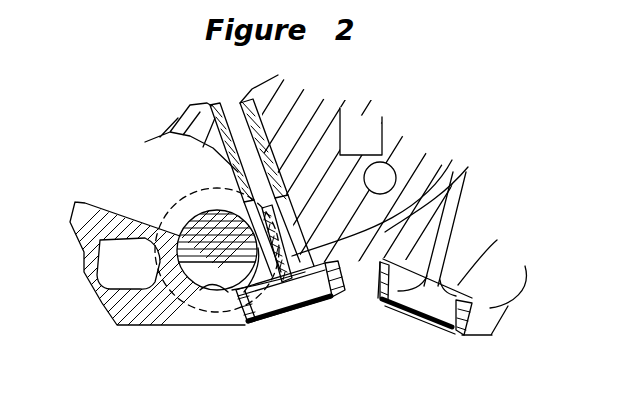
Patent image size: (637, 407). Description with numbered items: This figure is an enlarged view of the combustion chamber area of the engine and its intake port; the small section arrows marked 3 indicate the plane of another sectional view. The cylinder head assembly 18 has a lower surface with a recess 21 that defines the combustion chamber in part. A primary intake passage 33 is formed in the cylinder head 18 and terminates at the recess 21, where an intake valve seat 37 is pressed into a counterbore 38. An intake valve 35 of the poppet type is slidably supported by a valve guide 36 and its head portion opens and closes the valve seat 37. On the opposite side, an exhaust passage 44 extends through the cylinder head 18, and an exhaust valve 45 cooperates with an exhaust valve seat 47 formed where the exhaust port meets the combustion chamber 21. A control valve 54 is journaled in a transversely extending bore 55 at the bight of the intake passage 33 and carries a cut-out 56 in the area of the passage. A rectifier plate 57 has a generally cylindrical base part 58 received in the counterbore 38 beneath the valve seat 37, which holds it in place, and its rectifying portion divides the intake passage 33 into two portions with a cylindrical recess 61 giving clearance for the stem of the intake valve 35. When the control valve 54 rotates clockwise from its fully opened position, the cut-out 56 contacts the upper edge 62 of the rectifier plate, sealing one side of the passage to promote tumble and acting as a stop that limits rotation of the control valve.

The cylinder head assembly 18 is at (455, 122).
The combustion chamber recess 21 is at (390, 362).
The primary intake passage 33 is at (104, 214).
The intake valve 35 is at (278, 230).
The valve guide 36 is at (263, 122).
The intake valve seat 37 is at (243, 325).
The counterbore 38 is at (322, 302).
The exhaust passage 44 is at (465, 280).
The exhaust valve 45 is at (455, 219).
The exhaust valve seat 47 is at (478, 310).
The control valve 54 is at (186, 211).
The transverse bore 55 is at (213, 296).
The cut-out 56 is at (200, 243).
The rectifier plate 57 is at (286, 185).
The cylindrical base part 58 is at (452, 195).
The cylindrical recess 61 is at (309, 237).
The upper edge 62 is at (183, 205).
The section line 3- 3 is at (145, 327).